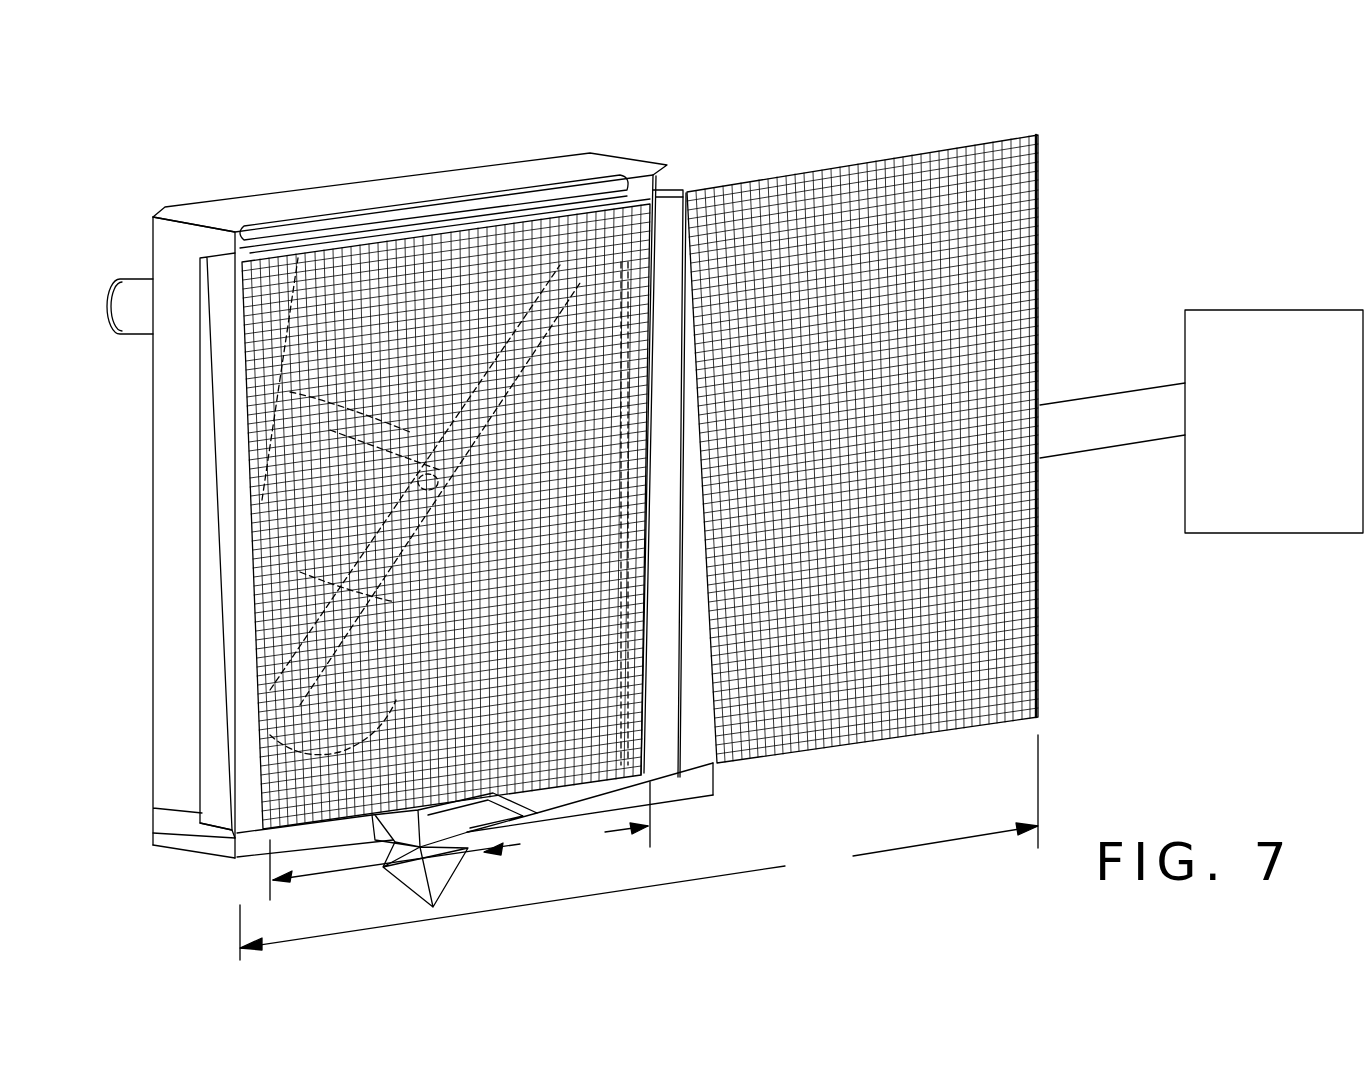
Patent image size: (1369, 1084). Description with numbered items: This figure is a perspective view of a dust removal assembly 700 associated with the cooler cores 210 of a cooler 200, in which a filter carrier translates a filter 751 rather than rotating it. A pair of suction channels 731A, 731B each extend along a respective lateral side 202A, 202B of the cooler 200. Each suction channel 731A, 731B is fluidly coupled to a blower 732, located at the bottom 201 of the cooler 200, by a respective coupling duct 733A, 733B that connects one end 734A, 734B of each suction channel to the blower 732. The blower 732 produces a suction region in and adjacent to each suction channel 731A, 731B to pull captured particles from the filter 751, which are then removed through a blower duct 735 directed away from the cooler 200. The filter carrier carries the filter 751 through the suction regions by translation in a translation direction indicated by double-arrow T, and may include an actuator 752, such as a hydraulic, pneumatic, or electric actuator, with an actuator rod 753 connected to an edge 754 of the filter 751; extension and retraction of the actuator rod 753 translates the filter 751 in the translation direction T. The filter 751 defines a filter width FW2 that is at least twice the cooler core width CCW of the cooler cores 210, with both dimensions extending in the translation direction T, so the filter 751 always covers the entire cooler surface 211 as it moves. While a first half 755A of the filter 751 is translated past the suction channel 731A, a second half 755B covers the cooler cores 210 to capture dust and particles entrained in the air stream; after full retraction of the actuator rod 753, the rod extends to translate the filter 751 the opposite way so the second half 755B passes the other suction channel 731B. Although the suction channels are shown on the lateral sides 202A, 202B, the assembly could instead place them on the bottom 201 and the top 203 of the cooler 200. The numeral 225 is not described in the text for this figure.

The cooler 200 is at (478, 124).
The top 203 is at (334, 195).
The lateral side 202B is at (200, 535).
The translation direction T is at (410, 213).
The suction channel 731B is at (198, 290).
The end of suction channel 734B is at (233, 823).
The bottom 201 is at (248, 853).
The dust removal assembly 700 is at (718, 157).
The second half of filter 755B is at (278, 484).
The cooler surface 211 is at (573, 254).
The cooler core 210 is at (290, 392).
The fan hub 225 is at (420, 468).
The lateral side 202A is at (683, 187).
The suction channel 731A is at (690, 297).
The filter 751 is at (1046, 219).
The first half of filter 755A is at (985, 592).
The edge of filter 754 is at (1040, 293).
The actuator 752 is at (1300, 310).
The actuator rod 753 is at (1092, 452).
The end of suction channel 734A is at (716, 770).
The coupling duct 733A is at (662, 805).
The coupling duct 733B is at (316, 853).
The blower 732 is at (524, 858).
The blower duct 735 is at (443, 870).
The cooler core width CCW is at (460, 841).
The filter width FW2 is at (639, 847).